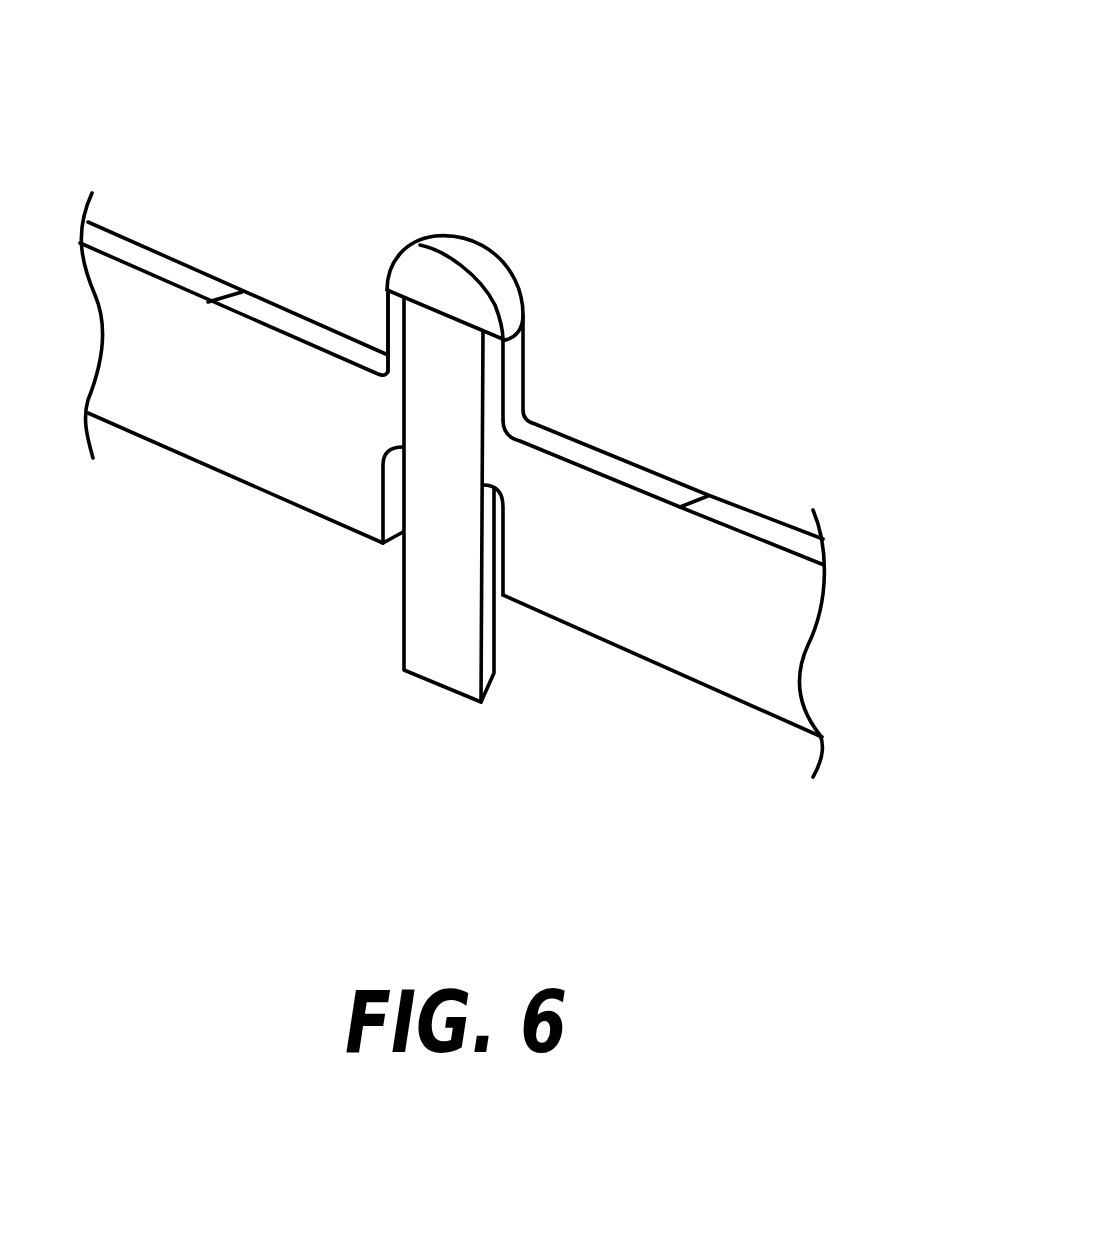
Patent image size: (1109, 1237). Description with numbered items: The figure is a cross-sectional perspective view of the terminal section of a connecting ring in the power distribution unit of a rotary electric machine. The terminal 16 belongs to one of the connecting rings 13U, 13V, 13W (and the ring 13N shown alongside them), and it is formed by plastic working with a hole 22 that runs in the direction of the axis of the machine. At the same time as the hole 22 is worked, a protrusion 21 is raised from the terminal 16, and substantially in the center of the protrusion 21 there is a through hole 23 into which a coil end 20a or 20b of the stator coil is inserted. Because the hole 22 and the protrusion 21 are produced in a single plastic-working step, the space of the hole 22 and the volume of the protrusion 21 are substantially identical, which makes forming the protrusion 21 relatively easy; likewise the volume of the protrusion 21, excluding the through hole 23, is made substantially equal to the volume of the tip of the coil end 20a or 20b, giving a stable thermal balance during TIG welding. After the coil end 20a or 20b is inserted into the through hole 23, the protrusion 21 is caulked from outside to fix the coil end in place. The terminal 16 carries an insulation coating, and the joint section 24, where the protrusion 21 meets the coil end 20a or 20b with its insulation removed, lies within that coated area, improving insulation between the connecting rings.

The terminal 16 is at (378, 195).
The connecting ring (U phase) 13U is at (526, 485).
The connecting ring (V phase) 13V is at (526, 485).
The connecting ring (W phase) 13W is at (526, 485).
The bus bar (neutral) 13N is at (753, 526).
The coil end 20a is at (554, 504).
The coil end 20b is at (450, 647).
The protrusion 21 is at (510, 371).
The hole 22 is at (393, 510).
The through hole 23 is at (403, 337).
The joint section 24 is at (453, 287).